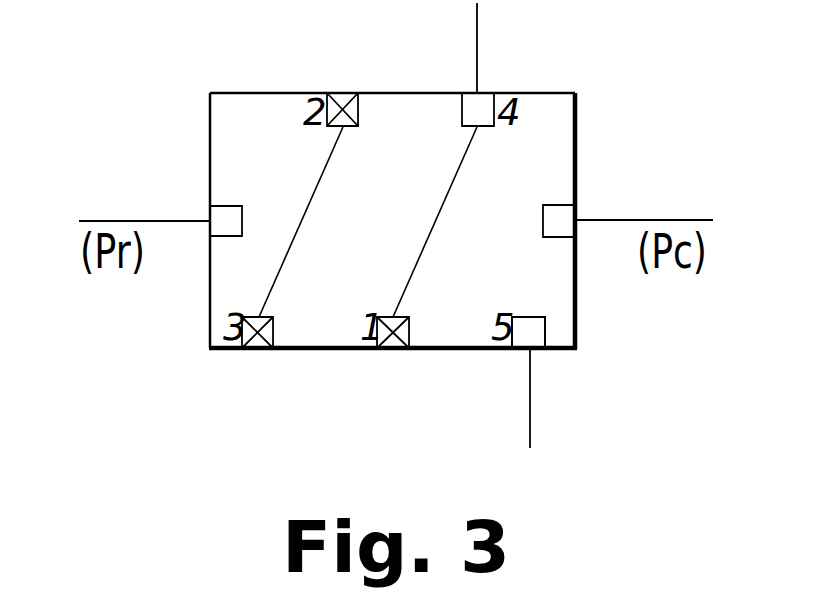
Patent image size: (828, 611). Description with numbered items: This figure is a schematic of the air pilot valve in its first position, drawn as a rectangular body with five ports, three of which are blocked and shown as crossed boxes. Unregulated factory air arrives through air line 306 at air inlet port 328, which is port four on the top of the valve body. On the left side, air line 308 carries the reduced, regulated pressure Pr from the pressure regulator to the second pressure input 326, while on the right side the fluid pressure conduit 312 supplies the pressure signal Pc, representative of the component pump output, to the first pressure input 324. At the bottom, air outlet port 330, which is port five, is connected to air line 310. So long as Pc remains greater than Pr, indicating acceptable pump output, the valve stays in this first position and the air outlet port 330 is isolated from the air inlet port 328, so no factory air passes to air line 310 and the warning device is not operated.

The air line 306 is at (477, 15).
The air inlet port 328 is at (481, 108).
The air line 308 is at (95, 221).
The second pressure input 326 is at (220, 216).
The first pressure input 324 is at (560, 214).
The fluid pressure conduit 312 is at (690, 220).
The air line 310 is at (530, 424).
The air outlet port 330 is at (531, 330).